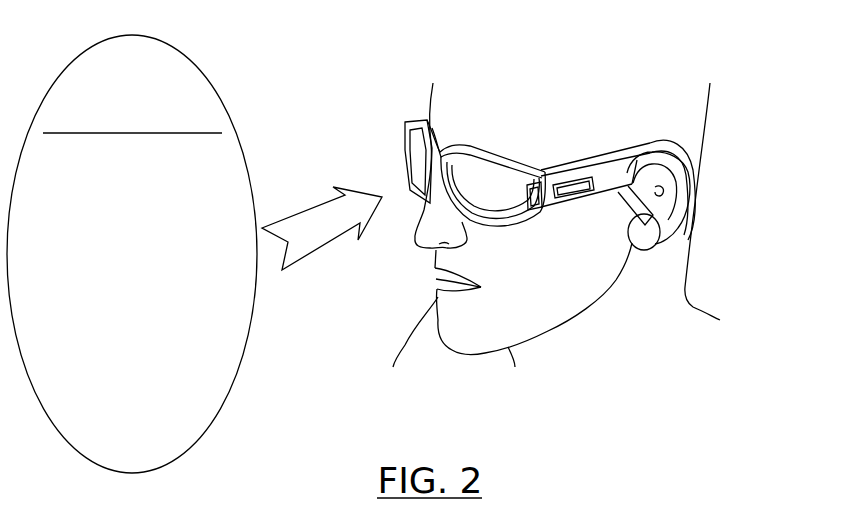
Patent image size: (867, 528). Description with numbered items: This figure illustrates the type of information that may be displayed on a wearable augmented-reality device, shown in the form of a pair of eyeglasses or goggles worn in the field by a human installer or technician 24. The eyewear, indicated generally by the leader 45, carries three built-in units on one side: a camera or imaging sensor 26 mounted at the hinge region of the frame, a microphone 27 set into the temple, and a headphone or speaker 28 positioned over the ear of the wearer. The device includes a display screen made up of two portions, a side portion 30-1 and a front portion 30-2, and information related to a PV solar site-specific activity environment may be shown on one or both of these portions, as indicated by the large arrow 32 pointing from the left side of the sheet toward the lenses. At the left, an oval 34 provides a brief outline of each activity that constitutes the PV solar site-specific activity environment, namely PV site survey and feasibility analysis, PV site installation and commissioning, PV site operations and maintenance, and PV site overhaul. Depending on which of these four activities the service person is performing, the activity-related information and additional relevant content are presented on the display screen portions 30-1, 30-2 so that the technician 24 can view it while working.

The human installer/technician 24 is at (724, 111).
The camera or imaging sensor 26 is at (534, 205).
The microphone 27 is at (572, 193).
The headphone or speaker 28 is at (653, 220).
The display screen portion 30-1 is at (407, 163).
The display screen portion 30-2 is at (487, 190).
The arrow 32 is at (318, 250).
The oval 34 is at (74, 452).
The eyewear device 45 is at (499, 195).